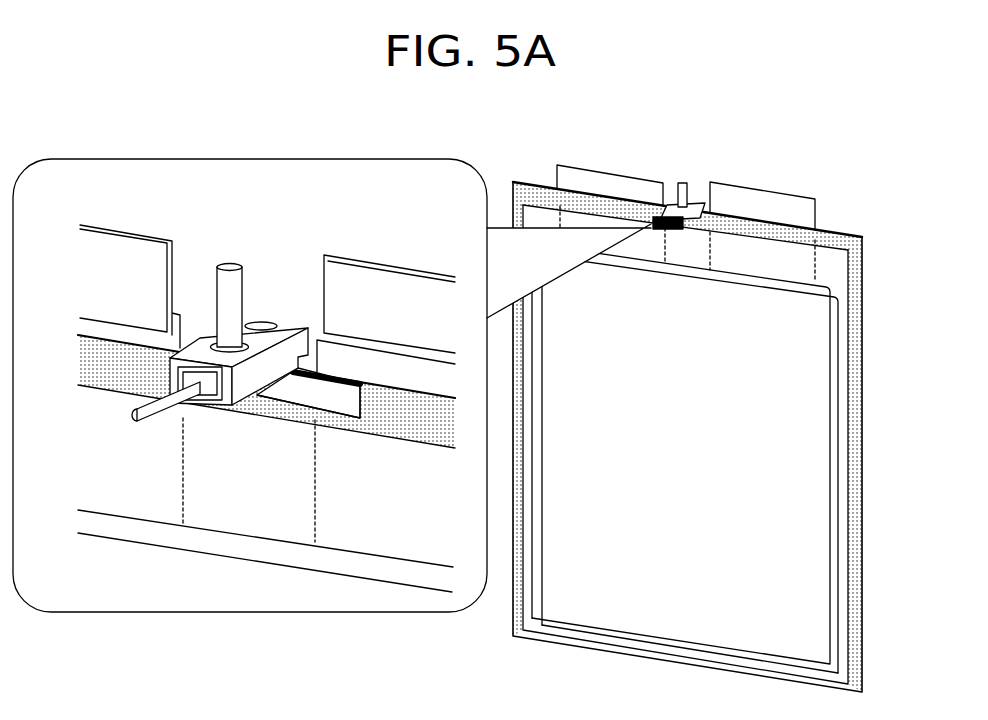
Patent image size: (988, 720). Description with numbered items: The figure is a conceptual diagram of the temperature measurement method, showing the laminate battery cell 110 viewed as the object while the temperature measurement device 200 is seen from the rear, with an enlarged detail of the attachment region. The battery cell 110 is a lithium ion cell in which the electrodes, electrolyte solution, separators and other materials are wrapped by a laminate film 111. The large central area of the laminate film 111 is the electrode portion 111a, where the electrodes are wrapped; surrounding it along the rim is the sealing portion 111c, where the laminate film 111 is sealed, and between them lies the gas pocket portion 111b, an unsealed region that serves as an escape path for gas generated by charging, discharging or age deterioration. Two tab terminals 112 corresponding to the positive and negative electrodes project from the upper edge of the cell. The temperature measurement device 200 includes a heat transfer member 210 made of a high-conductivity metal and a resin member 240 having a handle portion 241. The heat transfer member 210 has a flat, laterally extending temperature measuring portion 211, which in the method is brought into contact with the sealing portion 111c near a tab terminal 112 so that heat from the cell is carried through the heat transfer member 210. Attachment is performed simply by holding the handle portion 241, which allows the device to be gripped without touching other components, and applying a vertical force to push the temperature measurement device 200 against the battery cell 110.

The laminate battery cell 110 is at (471, 390).
The laminate film 111 is at (471, 410).
The electrode portion 111a is at (817, 330).
The gas pocket portion 111b is at (832, 280).
The sealing portion 111c is at (857, 237).
The tab terminal 112 is at (613, 174).
The temperature measurement device 200 is at (689, 182).
The heat transfer member 210 is at (326, 416).
The temperature measuring portion 211 is at (302, 396).
The resin member 240 is at (247, 322).
The handle portion 241 is at (228, 282).